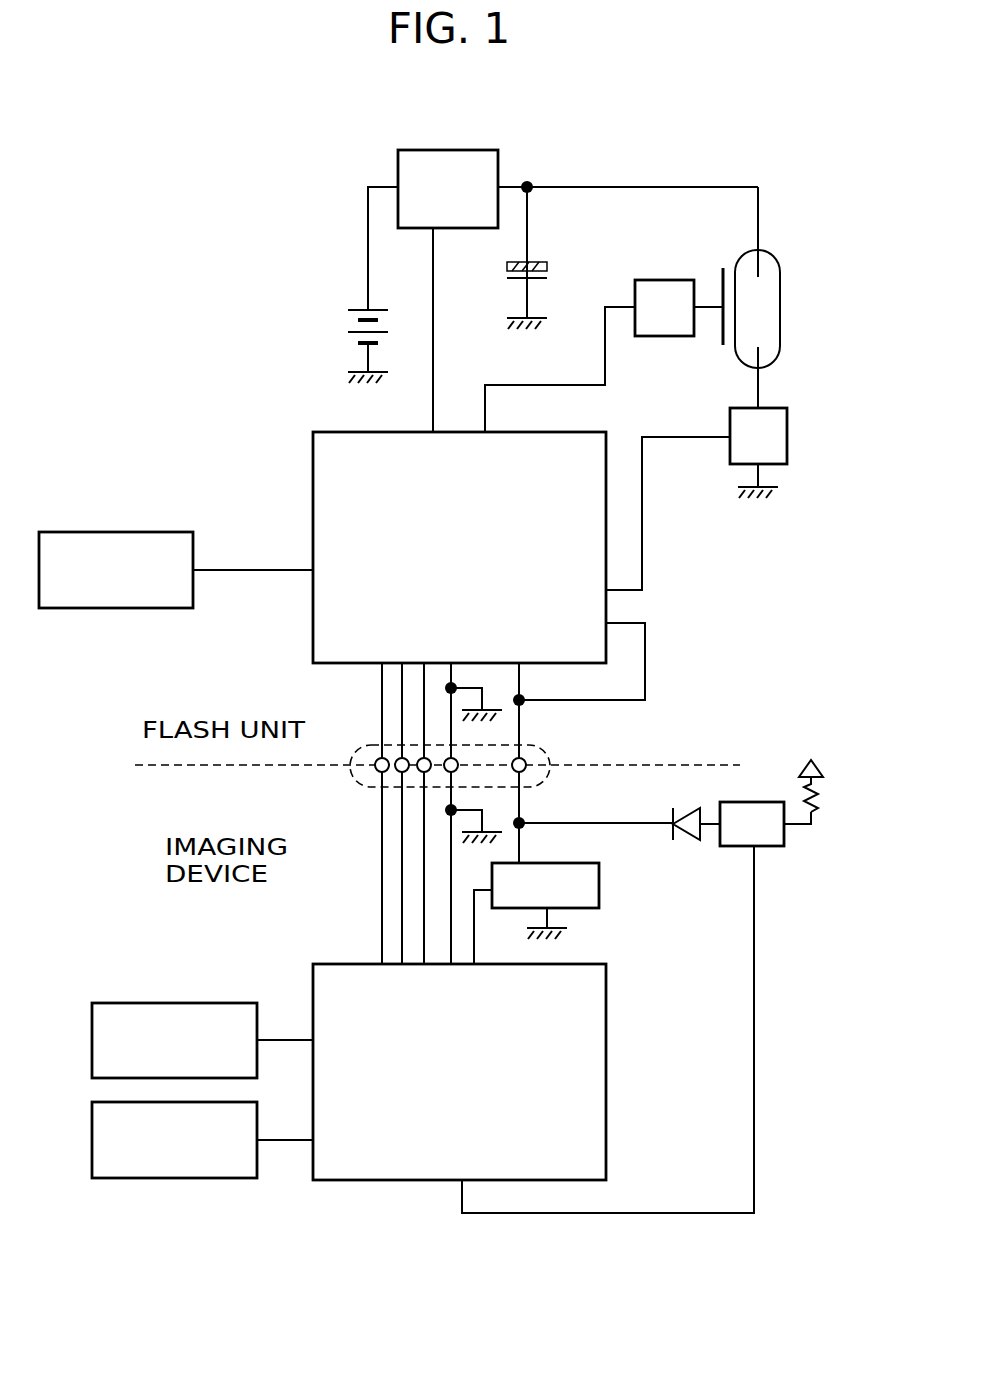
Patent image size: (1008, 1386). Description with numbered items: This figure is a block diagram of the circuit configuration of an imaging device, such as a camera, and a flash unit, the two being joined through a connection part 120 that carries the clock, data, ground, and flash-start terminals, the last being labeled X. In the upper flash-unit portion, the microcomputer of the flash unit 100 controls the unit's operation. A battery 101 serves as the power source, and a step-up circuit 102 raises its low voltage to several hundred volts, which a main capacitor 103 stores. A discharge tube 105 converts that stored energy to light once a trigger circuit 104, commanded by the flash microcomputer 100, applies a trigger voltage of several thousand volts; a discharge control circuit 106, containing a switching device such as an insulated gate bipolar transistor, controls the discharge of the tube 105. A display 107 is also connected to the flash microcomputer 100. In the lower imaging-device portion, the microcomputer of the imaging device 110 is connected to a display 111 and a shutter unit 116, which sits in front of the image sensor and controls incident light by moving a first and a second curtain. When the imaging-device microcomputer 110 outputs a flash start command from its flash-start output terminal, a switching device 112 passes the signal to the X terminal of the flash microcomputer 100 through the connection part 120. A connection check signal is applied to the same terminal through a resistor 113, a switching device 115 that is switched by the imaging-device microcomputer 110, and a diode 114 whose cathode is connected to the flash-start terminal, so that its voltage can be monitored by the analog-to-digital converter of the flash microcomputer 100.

The microcomputer of the flash unit 100 is at (313, 499).
The battery 101 is at (344, 328).
The step-up circuit 102 is at (452, 150).
The main capacitor 103 is at (541, 262).
The trigger circuit 104 is at (666, 280).
The discharge tube 105 is at (782, 309).
The discharge control circuit 106 is at (790, 434).
The display 107 is at (108, 532).
The microcomputer of the imaging device 110 is at (606, 1068).
The display 111 is at (172, 1003).
The switching device 112 is at (600, 890).
The resistor 113 is at (823, 800).
The diode 114 is at (685, 841).
The switching device 115 is at (767, 847).
The shutter unit 116 is at (175, 1178).
The connection part 120 is at (552, 778).